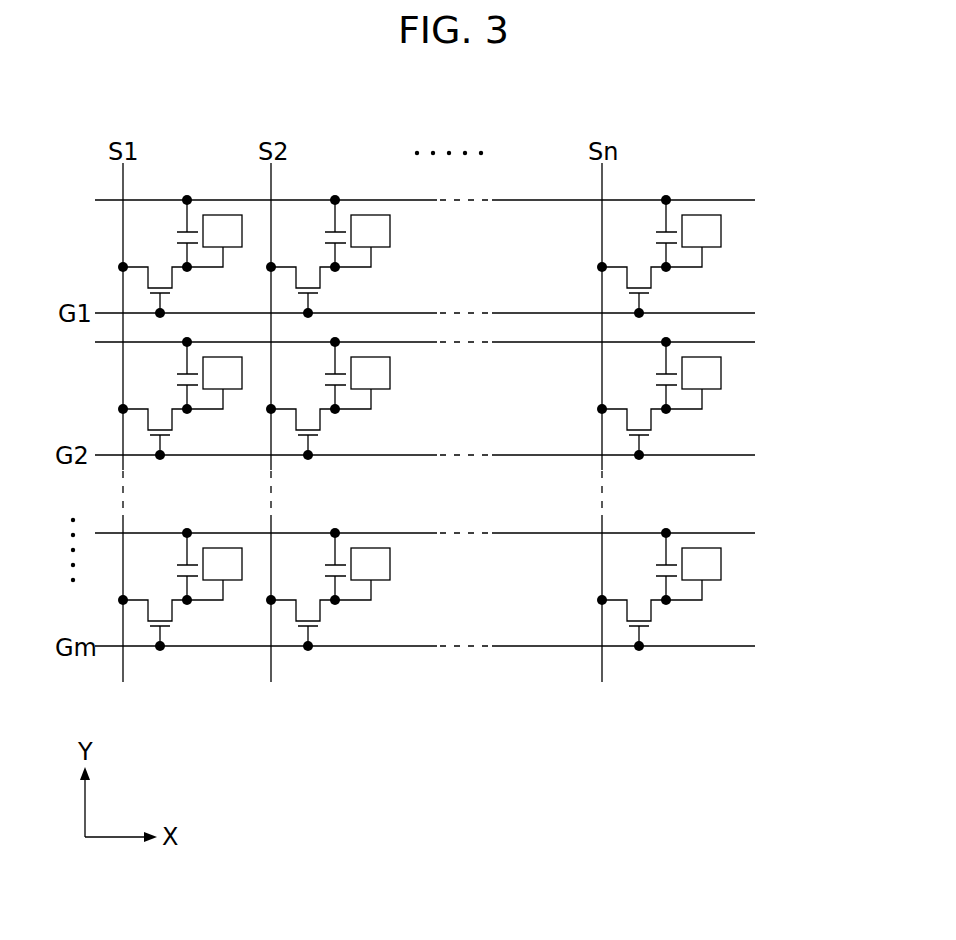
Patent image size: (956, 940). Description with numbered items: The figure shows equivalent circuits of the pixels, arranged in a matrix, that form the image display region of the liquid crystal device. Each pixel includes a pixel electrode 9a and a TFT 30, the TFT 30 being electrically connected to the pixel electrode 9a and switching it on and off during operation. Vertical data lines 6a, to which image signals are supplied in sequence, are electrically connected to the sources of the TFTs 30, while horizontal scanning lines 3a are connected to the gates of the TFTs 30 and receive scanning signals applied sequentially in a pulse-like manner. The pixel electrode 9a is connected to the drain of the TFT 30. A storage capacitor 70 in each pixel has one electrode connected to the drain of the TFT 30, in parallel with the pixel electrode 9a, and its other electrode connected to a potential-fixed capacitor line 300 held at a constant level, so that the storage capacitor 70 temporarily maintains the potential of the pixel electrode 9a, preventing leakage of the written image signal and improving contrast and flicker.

The data line 6a is at (125, 178).
The storage capacitor 70 is at (175, 240).
The TFT 30 is at (147, 285).
The capacitor line 300 is at (738, 201).
The pixel electrode 9a is at (717, 235).
The scanning line 3a is at (742, 313).